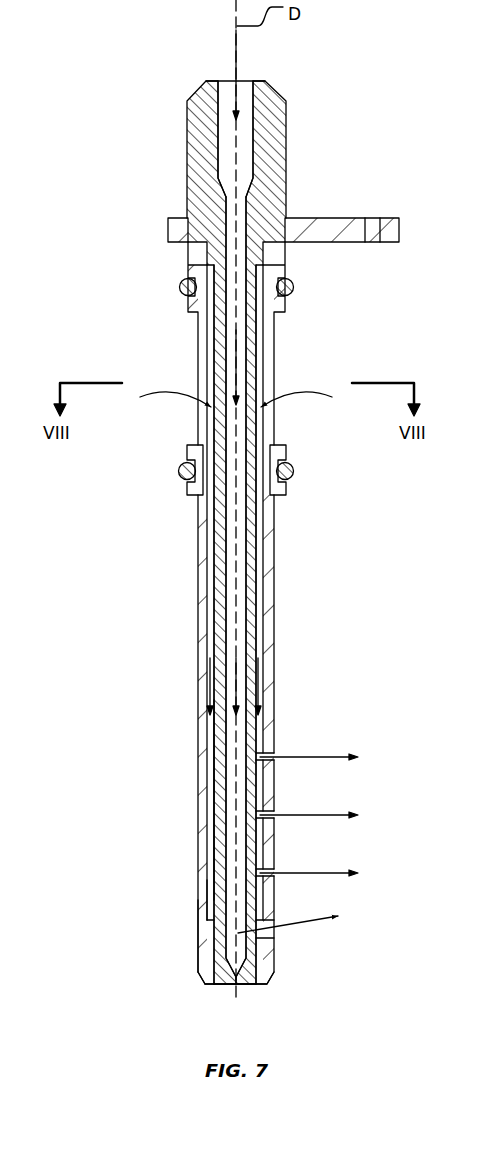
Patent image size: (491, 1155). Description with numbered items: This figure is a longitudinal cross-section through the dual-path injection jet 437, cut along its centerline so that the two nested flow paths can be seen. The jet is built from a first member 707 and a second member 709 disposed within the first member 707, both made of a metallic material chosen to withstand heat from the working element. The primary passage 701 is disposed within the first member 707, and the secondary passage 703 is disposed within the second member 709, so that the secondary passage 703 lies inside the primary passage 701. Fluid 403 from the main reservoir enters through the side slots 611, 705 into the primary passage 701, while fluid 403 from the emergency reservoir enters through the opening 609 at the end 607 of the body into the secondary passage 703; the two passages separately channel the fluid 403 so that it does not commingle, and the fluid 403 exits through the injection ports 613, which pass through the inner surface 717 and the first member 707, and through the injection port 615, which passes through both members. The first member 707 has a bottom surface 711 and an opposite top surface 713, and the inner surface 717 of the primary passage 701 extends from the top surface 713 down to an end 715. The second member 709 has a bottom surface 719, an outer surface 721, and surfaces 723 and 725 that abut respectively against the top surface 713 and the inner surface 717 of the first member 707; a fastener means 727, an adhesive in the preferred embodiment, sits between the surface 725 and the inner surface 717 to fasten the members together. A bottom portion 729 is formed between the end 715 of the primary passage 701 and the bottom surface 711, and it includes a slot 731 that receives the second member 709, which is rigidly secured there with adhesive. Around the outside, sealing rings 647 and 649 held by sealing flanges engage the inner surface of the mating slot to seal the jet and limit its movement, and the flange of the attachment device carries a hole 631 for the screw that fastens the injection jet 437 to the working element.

The injection jet 437 is at (116, 88).
The fluid 403 is at (236, 68).
The end 607 is at (208, 81).
The opening 609 is at (249, 73).
The surface 723 is at (199, 216).
The top surface 713 is at (299, 217).
The hole 631 is at (373, 218).
The surface 725 is at (200, 248).
The fastener means 727 is at (273, 254).
The sealing ring 649 is at (179, 287).
The sealing ring 647 is at (178, 472).
The side slot 705 is at (206, 345).
The slot 611 is at (264, 365).
The second member 709 is at (213, 558).
The first member 707 is at (274, 556).
The secondary passage 703 is at (224, 595).
The primary passage 701 is at (267, 612).
The inner surface 717 is at (196, 747).
The outer surface 721 is at (211, 790).
The injection ports 613 is at (274, 762).
The injection port 615 is at (273, 940).
The end 715 is at (206, 912).
The bottom portion 729 is at (195, 940).
The bottom surface 711 is at (207, 989).
The bottom surface 719 is at (249, 987).
The slot 731 is at (259, 972).